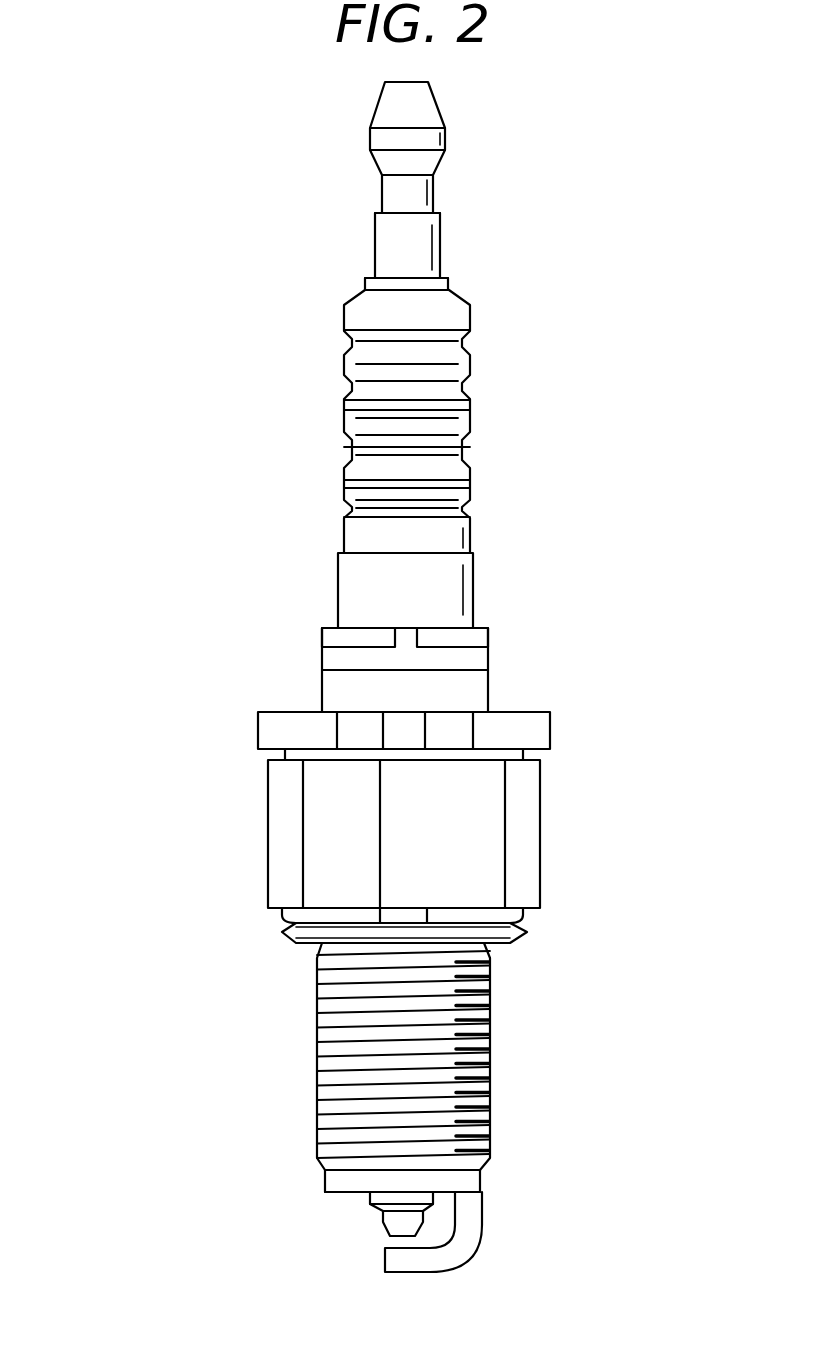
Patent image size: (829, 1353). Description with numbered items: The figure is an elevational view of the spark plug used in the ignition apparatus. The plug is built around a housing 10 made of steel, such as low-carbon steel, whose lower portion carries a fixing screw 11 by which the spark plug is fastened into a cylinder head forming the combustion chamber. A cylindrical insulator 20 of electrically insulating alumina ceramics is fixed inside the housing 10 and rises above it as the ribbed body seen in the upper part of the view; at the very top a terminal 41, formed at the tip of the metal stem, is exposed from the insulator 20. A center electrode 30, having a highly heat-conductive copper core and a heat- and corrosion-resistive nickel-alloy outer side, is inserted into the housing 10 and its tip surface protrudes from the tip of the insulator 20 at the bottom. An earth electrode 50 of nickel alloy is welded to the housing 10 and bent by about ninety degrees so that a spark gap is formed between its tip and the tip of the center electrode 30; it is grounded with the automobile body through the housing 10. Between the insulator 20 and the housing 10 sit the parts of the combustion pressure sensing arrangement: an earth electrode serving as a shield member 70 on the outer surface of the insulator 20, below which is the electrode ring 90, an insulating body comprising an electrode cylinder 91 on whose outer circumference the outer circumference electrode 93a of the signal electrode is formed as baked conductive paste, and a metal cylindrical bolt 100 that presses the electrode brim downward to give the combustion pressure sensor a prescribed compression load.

The terminal 41 is at (393, 193).
The insulator 20 is at (352, 388).
The earth electrode (shield member) 70 is at (345, 578).
The electrode ring (insulating body) 90 is at (362, 651).
The electrode cylinder 91 is at (343, 640).
The outer circumference electrode 93a is at (333, 662).
The metal cylindrical bolt 100 is at (265, 728).
The housing 10 is at (293, 970).
The fixing screw 11 is at (317, 1002).
The center electrode 30 is at (383, 1222).
The earth electrode 50 is at (465, 1232).